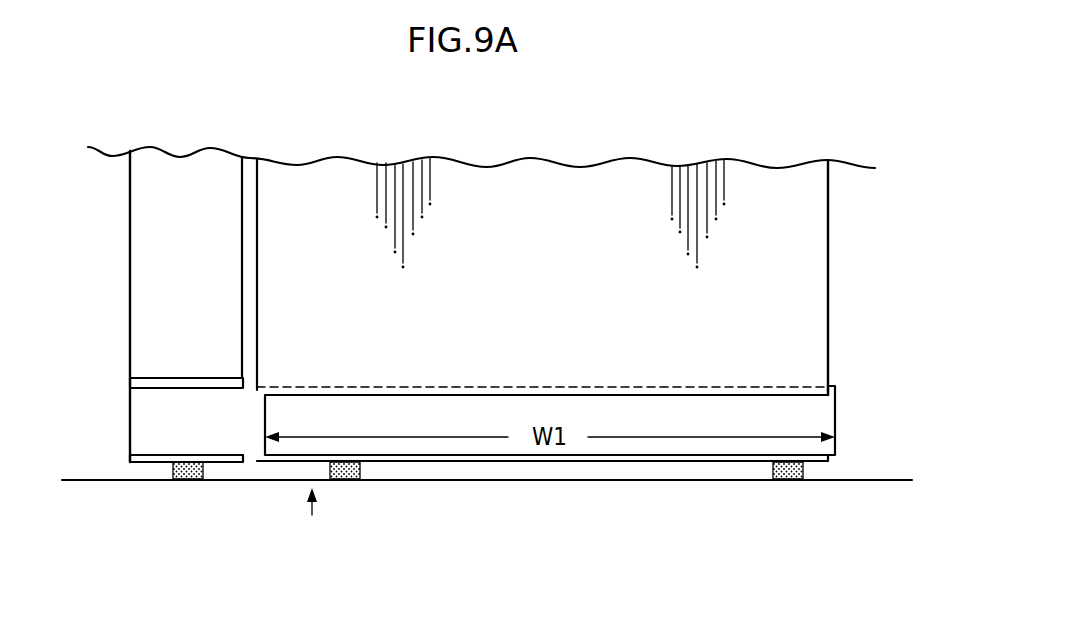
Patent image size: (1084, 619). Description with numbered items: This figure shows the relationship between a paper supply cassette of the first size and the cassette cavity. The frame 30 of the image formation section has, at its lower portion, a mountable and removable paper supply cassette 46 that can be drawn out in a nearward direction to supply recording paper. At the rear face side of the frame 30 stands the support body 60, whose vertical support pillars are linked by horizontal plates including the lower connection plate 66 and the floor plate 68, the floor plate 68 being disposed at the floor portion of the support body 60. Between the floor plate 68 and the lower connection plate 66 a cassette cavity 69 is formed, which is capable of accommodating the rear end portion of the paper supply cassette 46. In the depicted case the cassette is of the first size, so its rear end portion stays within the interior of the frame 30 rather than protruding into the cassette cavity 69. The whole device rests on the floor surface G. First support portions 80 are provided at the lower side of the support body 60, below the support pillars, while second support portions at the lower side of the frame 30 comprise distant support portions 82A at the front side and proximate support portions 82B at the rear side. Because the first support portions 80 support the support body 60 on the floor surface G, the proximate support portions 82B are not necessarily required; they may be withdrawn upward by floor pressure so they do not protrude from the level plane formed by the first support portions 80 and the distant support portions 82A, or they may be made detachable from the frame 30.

The frame 30 is at (828, 288).
The paper supply cassette 46 is at (835, 418).
The support body 60 is at (130, 293).
The lower connection plate 66 is at (143, 377).
The floor plate 68 is at (143, 455).
The cassette cavity 69 is at (205, 430).
The first support portion 80 is at (163, 479).
The distant support portion 82A is at (770, 479).
The proximate support portion 82B is at (363, 479).
The floor surface G is at (853, 480).